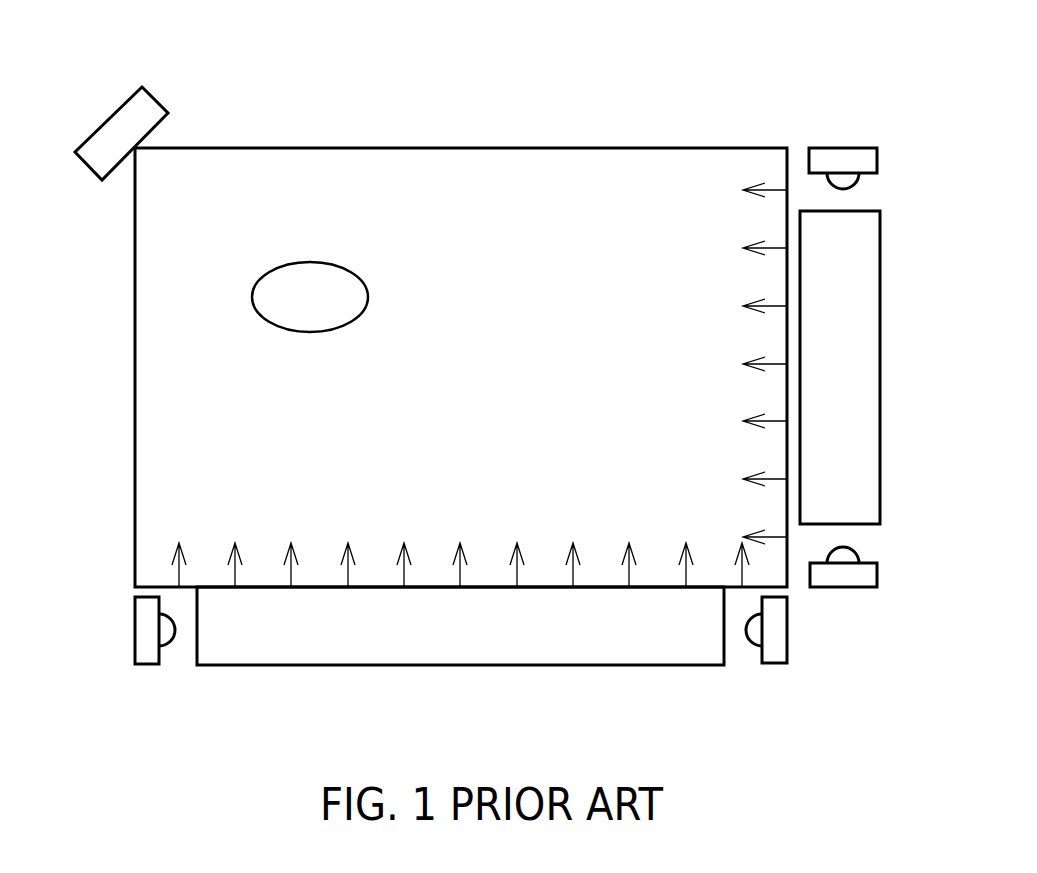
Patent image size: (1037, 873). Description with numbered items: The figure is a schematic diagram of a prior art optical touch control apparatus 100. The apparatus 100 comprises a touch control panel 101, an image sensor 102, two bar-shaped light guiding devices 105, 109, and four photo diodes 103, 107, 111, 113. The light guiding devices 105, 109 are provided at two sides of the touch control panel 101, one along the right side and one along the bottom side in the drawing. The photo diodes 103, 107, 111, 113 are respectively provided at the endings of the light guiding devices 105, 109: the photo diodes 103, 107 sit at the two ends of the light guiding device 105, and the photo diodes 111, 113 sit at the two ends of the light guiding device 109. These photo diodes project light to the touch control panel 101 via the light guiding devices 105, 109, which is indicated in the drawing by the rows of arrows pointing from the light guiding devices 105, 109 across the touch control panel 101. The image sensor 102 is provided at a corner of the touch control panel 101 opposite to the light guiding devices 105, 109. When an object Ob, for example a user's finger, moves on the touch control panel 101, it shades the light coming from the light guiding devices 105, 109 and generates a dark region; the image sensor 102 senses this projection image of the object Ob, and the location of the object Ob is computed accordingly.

The optical touch control apparatus 100 is at (898, 88).
The touch control panel 101 is at (713, 148).
The image sensor 102 is at (86, 168).
The photo diode 103 is at (877, 160).
The light guiding device 105 is at (880, 368).
The photo diode 107 is at (877, 576).
The light guiding device 109 is at (463, 665).
The photo diode 111 is at (787, 630).
The photo diode 113 is at (133, 628).
The object Ob is at (310, 262).